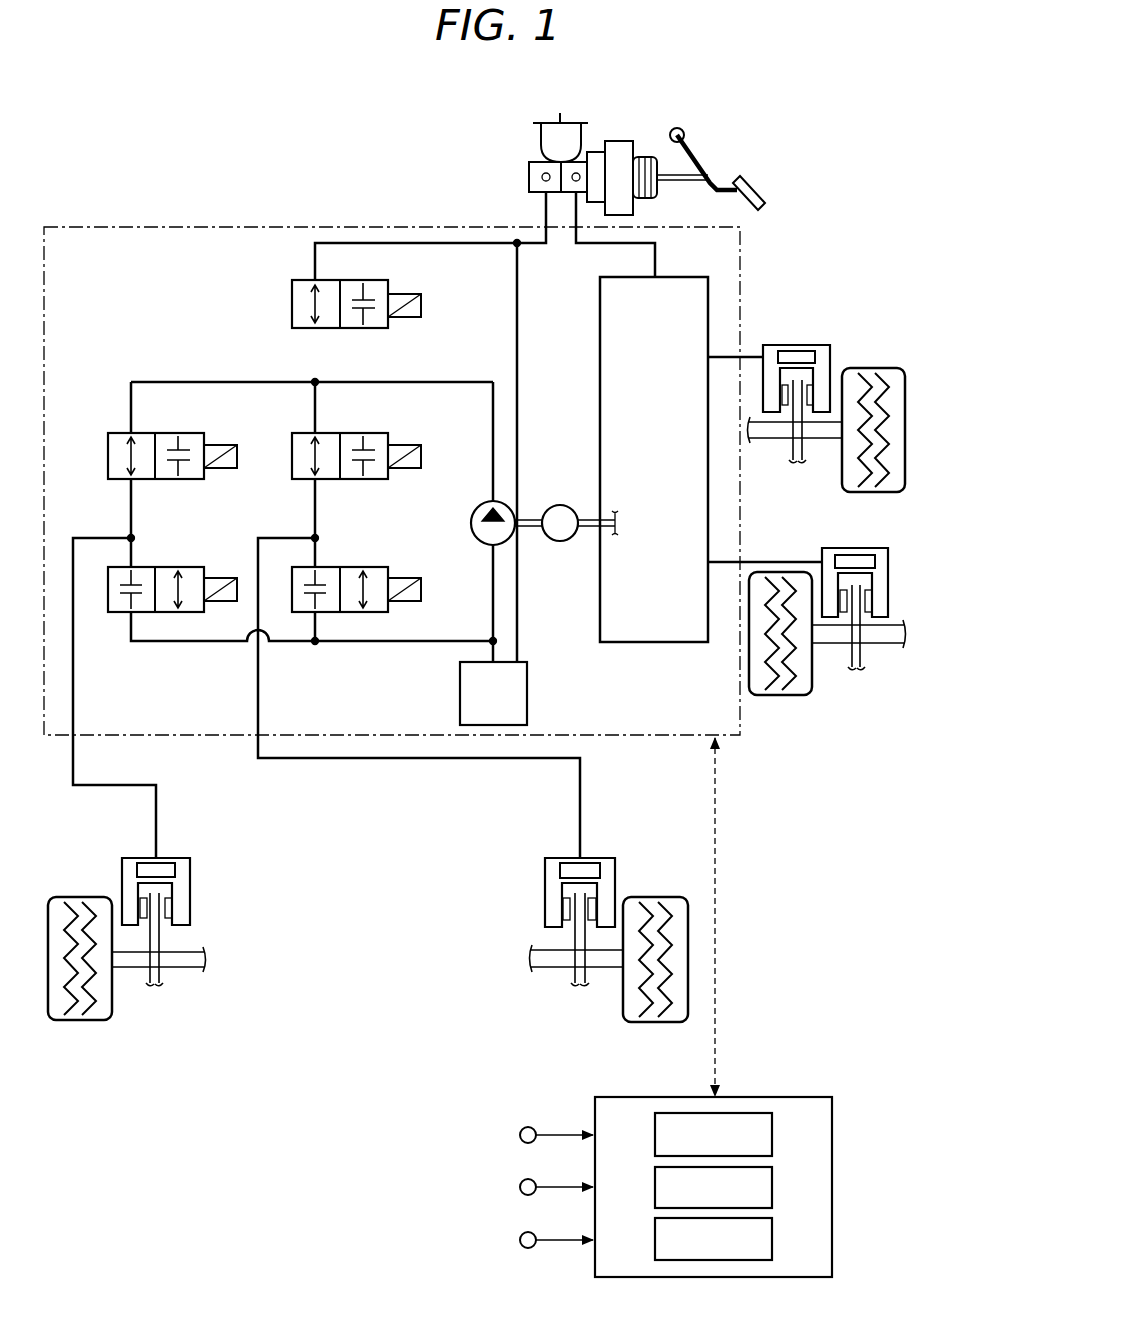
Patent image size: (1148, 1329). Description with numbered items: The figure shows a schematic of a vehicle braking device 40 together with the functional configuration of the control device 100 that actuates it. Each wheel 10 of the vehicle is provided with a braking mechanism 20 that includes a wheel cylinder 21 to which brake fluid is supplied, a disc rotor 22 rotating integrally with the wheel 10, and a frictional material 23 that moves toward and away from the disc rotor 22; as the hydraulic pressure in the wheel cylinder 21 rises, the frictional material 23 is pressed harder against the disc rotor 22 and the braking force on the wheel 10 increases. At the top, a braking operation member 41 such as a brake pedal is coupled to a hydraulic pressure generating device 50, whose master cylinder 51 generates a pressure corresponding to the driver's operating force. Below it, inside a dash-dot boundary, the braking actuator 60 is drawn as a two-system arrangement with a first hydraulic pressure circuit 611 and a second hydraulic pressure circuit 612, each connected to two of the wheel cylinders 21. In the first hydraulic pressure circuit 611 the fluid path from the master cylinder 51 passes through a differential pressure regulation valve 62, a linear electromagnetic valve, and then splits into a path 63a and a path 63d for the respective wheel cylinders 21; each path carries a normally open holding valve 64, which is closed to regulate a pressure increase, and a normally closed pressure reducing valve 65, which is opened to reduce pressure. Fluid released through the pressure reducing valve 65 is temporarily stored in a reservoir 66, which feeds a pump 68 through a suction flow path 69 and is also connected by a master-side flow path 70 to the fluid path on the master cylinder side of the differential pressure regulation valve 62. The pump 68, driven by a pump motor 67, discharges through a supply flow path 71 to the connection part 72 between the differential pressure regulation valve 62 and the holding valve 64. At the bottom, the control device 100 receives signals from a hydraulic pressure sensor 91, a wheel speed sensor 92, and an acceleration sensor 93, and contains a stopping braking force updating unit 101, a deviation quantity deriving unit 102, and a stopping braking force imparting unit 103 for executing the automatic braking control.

The wheel 10 is at (905, 428).
The braking mechanism 20 is at (865, 296).
The wheel cylinder 21 is at (798, 350).
The disc rotor 22 is at (792, 447).
The frictional material 23 is at (788, 387).
The braking device 40 is at (755, 777).
The braking operation member 41 is at (757, 188).
The hydraulic pressure generating device 50 is at (511, 131).
The master cylinder 51 is at (529, 177).
The braking actuator 60 is at (80, 228).
The first hydraulic pressure circuit 611 is at (370, 241).
The second hydraulic pressure circuit 612 is at (703, 276).
The differential pressure regulation valve 62 is at (380, 275).
The path 63a is at (130, 403).
The path 63d is at (314, 403).
The holding valve 64 is at (193, 432).
The pressure reducing valve 65 is at (193, 565).
The reservoir 66 is at (459, 693).
The pump motor 67 is at (567, 487).
The pump 68 is at (463, 513).
The suction flow path 69 is at (492, 608).
The master-side flow path 70 is at (519, 342).
The supply flow path 71 is at (460, 380).
The connection part 72 is at (322, 380).
The hydraulic pressure sensor 91 is at (520, 1135).
The wheel speed sensor 92 is at (520, 1187).
The acceleration sensor 93 is at (520, 1240).
The control device 100 is at (800, 1096).
The stopping braking force updating unit 101 is at (713, 1134).
The deviation quantity deriving unit 102 is at (713, 1187).
The stopping braking force imparting unit 103 is at (713, 1239).